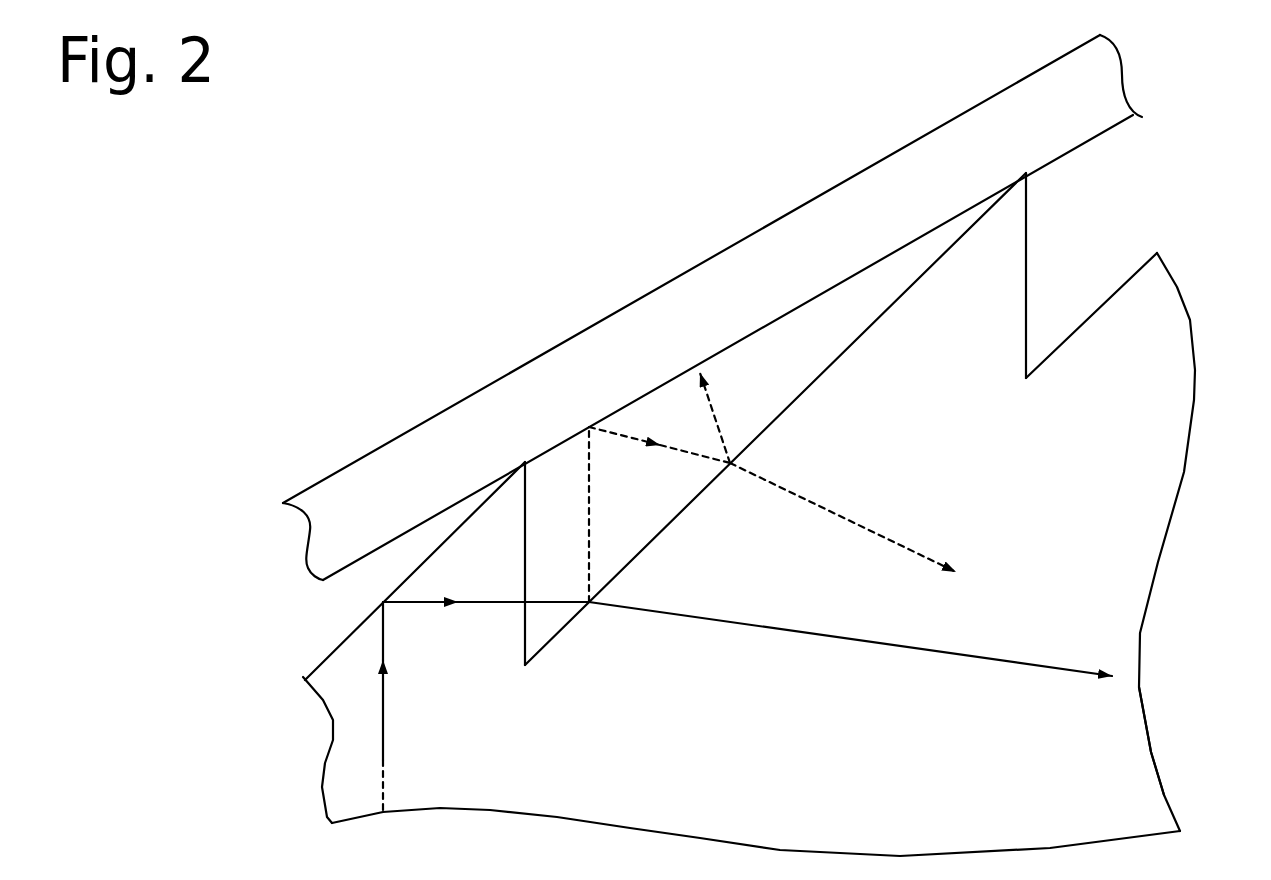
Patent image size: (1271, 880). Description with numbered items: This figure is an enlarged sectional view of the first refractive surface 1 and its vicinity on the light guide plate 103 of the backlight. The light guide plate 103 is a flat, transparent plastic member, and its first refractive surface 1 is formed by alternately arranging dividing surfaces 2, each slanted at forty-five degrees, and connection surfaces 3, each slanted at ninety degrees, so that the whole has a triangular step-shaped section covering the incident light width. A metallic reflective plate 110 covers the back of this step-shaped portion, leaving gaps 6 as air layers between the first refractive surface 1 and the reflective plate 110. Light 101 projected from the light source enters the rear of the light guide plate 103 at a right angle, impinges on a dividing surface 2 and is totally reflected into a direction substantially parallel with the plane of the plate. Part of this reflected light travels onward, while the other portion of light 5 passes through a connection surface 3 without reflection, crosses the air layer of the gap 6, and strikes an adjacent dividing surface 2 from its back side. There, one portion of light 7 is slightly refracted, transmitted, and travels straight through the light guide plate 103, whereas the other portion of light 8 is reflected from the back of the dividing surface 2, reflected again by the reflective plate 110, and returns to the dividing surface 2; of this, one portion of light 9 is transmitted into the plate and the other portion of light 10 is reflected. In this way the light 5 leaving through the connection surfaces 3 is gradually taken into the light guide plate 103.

The first refractive surface 1 is at (283, 650).
The dividing surface 2 is at (458, 530).
The connection surface 3 is at (522, 647).
The other portion of light 5 is at (400, 602).
The gap 6 is at (602, 447).
The one portion of light 7 is at (767, 628).
The other portion of light 8 is at (588, 553).
The one portion of light 9 is at (827, 512).
The other portion of light 10 is at (718, 430).
The light 101 is at (383, 737).
The light guide plate 103 is at (1148, 777).
The reflective plate 110 is at (358, 468).